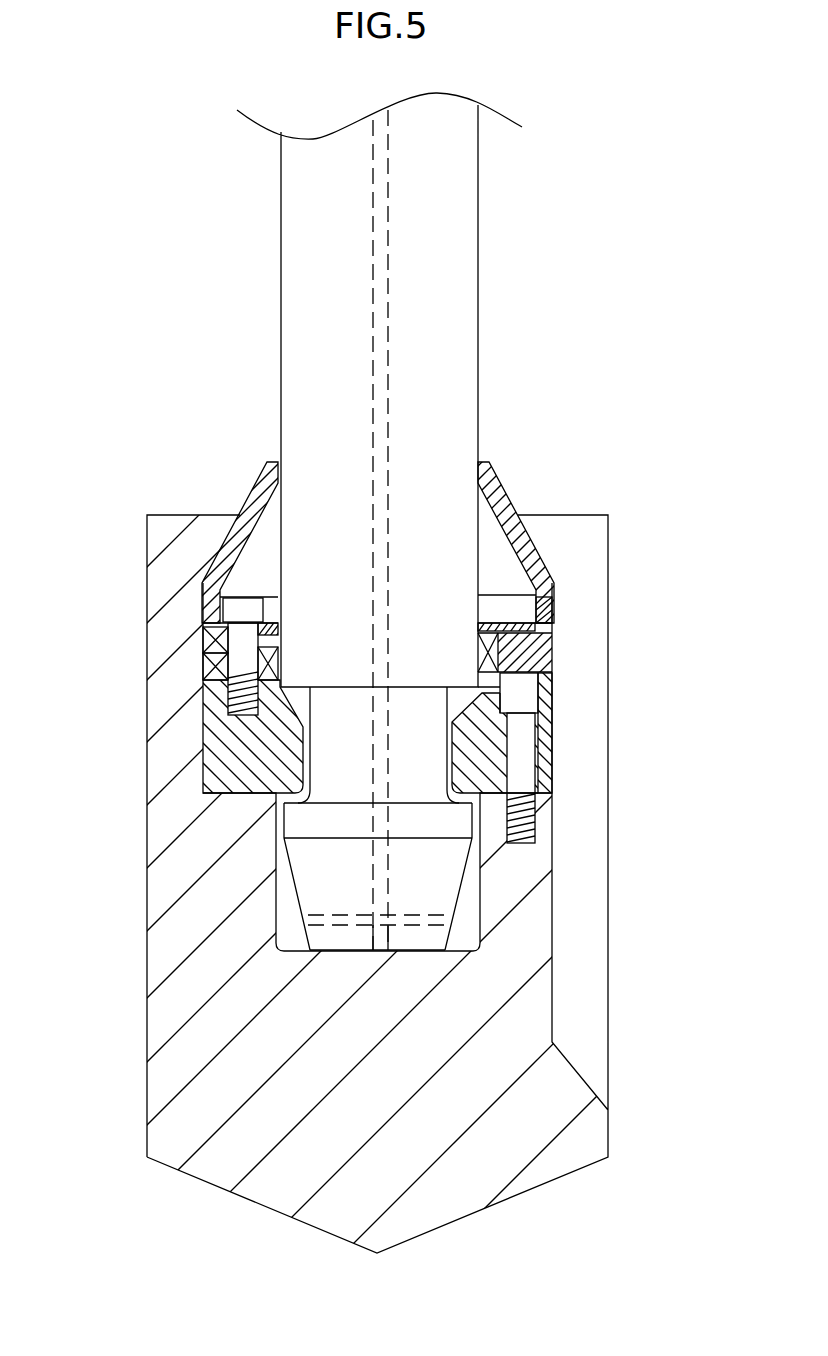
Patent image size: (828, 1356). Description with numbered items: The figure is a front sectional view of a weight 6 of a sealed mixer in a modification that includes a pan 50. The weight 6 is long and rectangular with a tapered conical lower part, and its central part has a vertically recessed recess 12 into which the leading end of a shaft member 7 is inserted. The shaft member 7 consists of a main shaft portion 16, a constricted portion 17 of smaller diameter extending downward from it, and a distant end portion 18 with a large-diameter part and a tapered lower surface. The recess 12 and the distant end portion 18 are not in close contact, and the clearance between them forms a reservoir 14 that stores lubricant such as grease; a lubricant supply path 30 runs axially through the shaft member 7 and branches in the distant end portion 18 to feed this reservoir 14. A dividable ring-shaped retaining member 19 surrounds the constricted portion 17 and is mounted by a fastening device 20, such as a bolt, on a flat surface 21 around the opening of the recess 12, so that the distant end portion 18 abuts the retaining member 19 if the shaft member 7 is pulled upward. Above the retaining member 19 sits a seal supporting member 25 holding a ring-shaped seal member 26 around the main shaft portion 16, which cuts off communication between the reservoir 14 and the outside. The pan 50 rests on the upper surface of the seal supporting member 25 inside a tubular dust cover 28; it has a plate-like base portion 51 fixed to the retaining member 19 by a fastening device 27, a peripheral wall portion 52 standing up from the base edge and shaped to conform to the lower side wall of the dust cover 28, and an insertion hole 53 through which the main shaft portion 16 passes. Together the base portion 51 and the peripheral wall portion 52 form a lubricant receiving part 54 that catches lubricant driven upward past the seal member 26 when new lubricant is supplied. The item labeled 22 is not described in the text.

The weight 6 is at (580, 1142).
The shaft member 7 is at (495, 218).
The recess 12 is at (280, 862).
The reservoir 14 is at (470, 940).
The main shaft portion 16 is at (462, 276).
The constricted portion 17 is at (430, 760).
The distant end portion 18 is at (447, 877).
The retaining member 19 is at (542, 732).
The fastening device 20 is at (535, 823).
The flat surface 21 is at (236, 770).
The screw head 22 is at (463, 700).
The seal supporting member 25 is at (213, 663).
The seal member 26 is at (213, 648).
The fastening device 27 is at (210, 613).
The dust cover 28 is at (232, 547).
The lubricant supply path 30 is at (390, 352).
The pan 50 is at (547, 613).
The base portion 51 is at (525, 640).
The peripheral wall portion 52 is at (540, 603).
The insertion hole 53 is at (235, 612).
The lubricant receiving part 54 is at (550, 608).